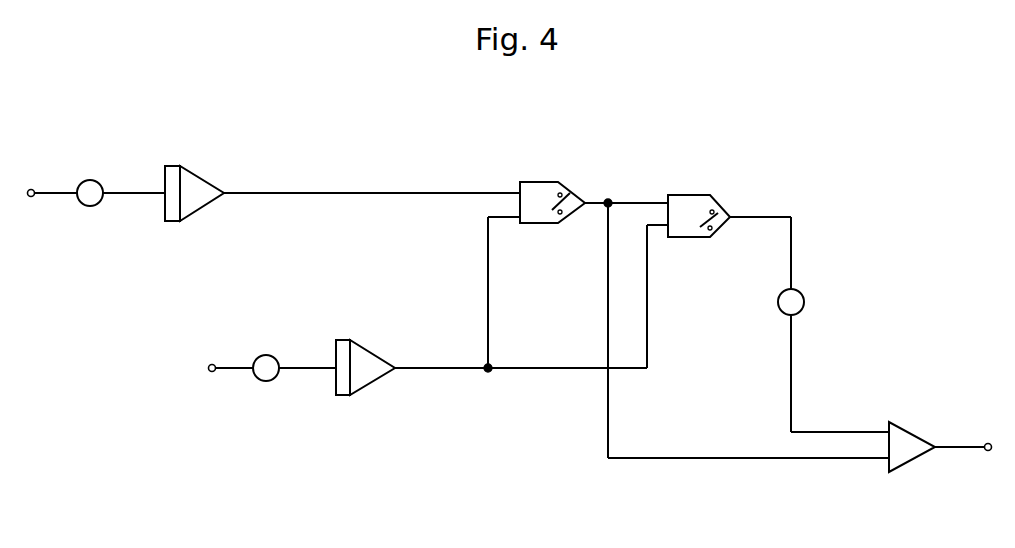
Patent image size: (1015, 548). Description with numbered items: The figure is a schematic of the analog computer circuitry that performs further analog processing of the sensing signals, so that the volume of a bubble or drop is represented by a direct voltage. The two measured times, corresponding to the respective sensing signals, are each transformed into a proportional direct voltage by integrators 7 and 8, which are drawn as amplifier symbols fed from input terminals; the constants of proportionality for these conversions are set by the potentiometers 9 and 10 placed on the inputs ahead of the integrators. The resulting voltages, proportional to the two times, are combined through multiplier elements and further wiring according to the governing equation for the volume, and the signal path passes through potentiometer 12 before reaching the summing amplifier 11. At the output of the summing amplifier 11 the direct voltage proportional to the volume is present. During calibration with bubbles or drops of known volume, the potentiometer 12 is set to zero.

The integrator 7 is at (192, 180).
The integrator 8 is at (367, 360).
The potentiometer 9 is at (89, 186).
The potentiometer 10 is at (286, 405).
The summing amplifier 11 is at (913, 443).
The potentiometer 12 is at (797, 301).